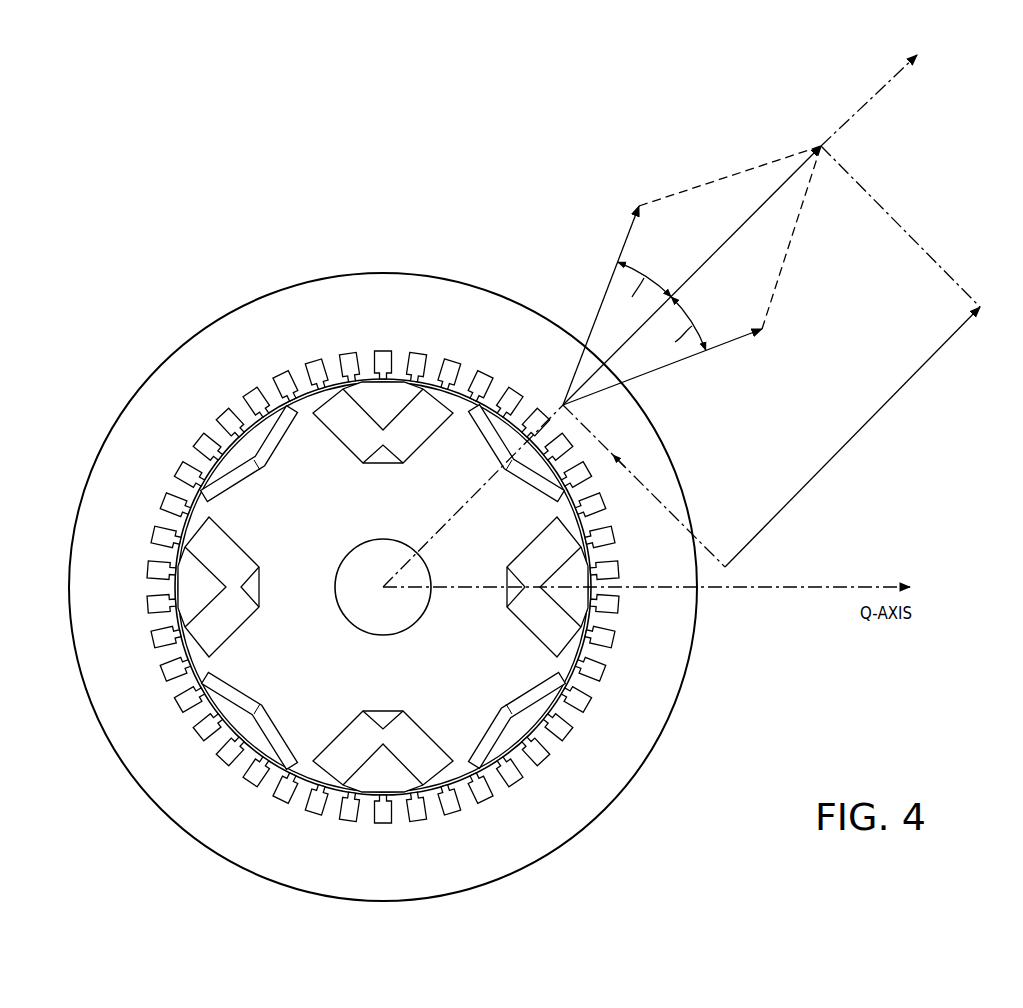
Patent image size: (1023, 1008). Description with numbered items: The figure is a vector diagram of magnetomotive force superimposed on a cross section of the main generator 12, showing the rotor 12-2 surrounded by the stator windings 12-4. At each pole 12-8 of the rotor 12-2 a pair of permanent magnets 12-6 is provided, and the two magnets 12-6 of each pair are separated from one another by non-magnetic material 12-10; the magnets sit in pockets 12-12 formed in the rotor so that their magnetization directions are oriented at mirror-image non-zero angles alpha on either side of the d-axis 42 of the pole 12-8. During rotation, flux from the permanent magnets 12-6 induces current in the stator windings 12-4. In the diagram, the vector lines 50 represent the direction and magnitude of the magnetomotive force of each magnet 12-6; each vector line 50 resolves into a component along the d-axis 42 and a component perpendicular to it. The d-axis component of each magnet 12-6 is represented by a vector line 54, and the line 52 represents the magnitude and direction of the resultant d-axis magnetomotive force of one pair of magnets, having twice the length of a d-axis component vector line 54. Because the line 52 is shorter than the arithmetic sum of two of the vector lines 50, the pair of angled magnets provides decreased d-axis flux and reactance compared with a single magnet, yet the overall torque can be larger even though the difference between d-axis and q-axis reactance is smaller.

The main generator 12 is at (110, 381).
The rotor 12-2 is at (305, 420).
The stator windings 12-4 is at (100, 723).
The permanent magnets 12-6 is at (272, 447).
The pole 12-8 is at (482, 694).
The non-magnetic material 12-10 is at (252, 460).
The V-shaped magnet pockets 12-12 is at (419, 408).
The d-axis 42 is at (870, 94).
The vector lines 50 is at (597, 313).
The resultant d-axis MMF line 52 is at (877, 405).
The d-axis component vector line 54 is at (628, 287).